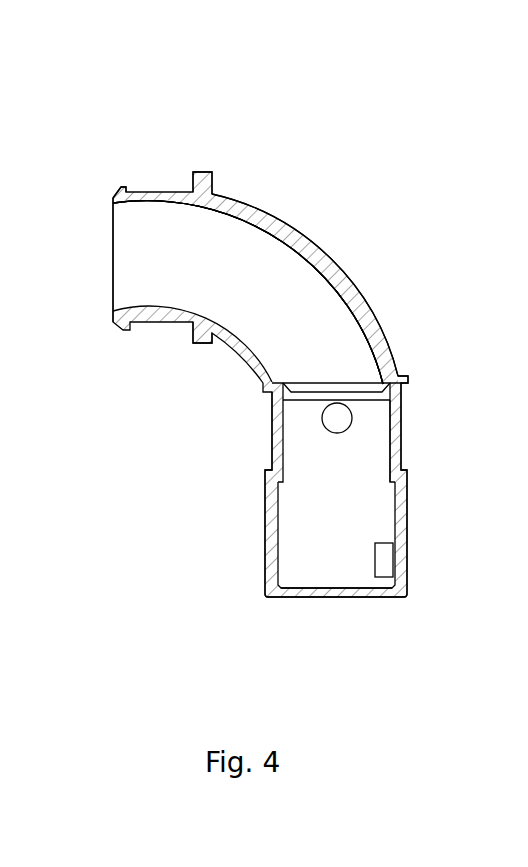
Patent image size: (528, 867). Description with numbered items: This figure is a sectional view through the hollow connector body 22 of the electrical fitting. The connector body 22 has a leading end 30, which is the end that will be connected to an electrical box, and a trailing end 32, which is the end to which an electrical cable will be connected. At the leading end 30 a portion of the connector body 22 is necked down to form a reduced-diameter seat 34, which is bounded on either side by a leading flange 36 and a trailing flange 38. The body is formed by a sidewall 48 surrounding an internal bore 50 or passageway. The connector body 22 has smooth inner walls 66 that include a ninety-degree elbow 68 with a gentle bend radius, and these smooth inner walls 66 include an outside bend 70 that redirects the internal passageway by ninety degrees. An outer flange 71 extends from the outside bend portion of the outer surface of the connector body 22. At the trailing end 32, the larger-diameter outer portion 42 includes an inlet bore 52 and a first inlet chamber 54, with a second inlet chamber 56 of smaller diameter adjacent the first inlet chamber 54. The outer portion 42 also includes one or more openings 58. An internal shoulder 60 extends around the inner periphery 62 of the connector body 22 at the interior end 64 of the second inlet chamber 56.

The connector body 22 is at (302, 177).
The leading end 30 is at (112, 260).
The trailing end 32 is at (340, 601).
The reduced-diameter seat 34 is at (160, 324).
The leading flange 36 is at (121, 188).
The trailing flange 38 is at (202, 172).
The outer portion 42 is at (407, 503).
The sidewall 48 is at (368, 308).
The internal bore 50 is at (228, 289).
The inlet bore 52 is at (315, 571).
The first inlet chamber 54 is at (302, 523).
The second inlet chamber 56 is at (325, 469).
The opening 58 is at (383, 560).
The internal shoulder 60 is at (380, 384).
The inner periphery 62 is at (384, 437).
The interior end 64 is at (305, 402).
The smooth inner walls 66 is at (233, 220).
The elbow 68 is at (312, 265).
The outside bend 70 is at (311, 266).
The outer flange 71 is at (408, 378).